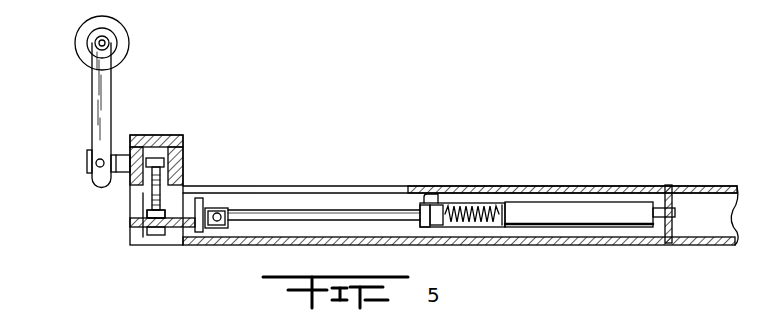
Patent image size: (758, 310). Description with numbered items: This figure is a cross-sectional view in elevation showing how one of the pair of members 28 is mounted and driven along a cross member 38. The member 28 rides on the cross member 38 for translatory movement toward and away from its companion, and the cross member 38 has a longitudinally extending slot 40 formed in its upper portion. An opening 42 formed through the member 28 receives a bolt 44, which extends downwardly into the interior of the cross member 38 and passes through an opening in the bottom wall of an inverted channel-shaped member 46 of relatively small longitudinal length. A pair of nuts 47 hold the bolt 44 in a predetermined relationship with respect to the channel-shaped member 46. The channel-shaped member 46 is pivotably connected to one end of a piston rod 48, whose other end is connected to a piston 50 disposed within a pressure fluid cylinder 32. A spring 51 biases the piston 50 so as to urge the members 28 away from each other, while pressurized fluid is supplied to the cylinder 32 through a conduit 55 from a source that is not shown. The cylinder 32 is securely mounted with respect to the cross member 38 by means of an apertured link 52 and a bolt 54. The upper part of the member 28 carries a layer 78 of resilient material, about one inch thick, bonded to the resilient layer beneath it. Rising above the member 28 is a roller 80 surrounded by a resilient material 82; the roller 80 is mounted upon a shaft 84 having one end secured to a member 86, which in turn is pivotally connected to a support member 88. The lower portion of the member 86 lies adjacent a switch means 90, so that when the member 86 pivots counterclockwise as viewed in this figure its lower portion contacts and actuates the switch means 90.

The member 28 is at (186, 142).
The pressure fluid cylinder 32 is at (556, 207).
The cross member 38 is at (438, 207).
The slot 40 is at (276, 190).
The opening 42 is at (167, 175).
The bolt 44 is at (147, 199).
The inverted channel-shaped member 46 is at (173, 227).
The nut 47 is at (142, 213).
The piston rod 48 is at (326, 212).
The piston 50 is at (442, 227).
The spring 51 is at (477, 207).
The apertured link 52 is at (678, 212).
The bolt 54 is at (673, 190).
The conduit 55 is at (430, 196).
The layer of resilient material 78 is at (163, 135).
The roller 80 is at (112, 46).
The resilient material 82 is at (124, 29).
The shaft 84 is at (99, 43).
The member 86 is at (92, 95).
The support member 88 is at (117, 152).
The switch means 90 is at (108, 190).